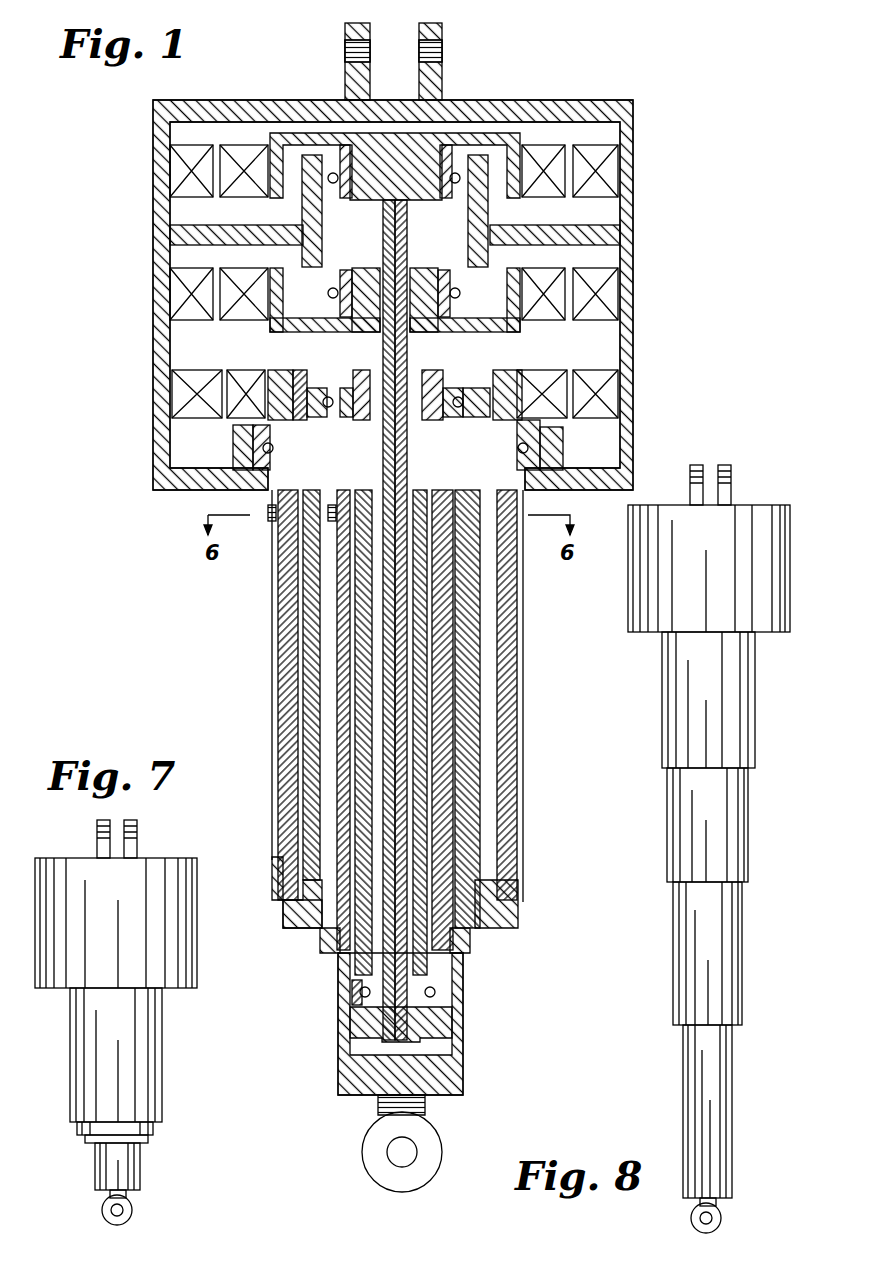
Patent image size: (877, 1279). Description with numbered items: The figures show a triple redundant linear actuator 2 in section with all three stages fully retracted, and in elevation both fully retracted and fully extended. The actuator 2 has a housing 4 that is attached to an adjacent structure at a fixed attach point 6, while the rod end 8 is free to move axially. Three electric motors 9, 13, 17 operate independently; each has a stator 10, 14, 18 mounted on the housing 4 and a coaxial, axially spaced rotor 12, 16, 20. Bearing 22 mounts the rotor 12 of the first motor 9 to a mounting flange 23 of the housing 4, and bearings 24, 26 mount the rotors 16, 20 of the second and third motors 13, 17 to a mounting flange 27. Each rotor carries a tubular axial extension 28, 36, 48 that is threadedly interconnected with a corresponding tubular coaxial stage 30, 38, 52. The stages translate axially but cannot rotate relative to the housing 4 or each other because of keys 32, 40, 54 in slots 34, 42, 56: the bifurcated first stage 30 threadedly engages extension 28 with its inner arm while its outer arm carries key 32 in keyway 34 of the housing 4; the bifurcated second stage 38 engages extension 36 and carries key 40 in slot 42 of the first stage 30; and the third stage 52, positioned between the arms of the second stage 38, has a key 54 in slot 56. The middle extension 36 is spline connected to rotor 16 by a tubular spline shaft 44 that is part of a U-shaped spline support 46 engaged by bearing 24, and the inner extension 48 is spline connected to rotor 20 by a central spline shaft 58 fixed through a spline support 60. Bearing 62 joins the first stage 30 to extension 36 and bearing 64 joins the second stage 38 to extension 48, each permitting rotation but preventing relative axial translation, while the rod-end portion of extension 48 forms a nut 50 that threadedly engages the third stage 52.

In FIG. 1, the linear actuator 2 is at (655, 180).
In FIG. 7, the linear actuator 2 is at (188, 855).
In FIG. 8, the linear actuator 2 is at (752, 482).
In FIG. 1, the housing 4 is at (633, 300).
In FIG. 7, the housing 4 is at (122, 910).
In FIG. 8, the housing 4 is at (716, 560).
In FIG. 1, the fixed attach point 6 is at (447, 52).
In FIG. 7, the fixed attach point 6 is at (138, 828).
In FIG. 8, the fixed attach point 6 is at (682, 475).
In FIG. 1, the rod end 8 is at (372, 1180).
In FIG. 7, the rod end 8 is at (132, 1215).
In FIG. 8, the rod end 8 is at (722, 1212).
In FIG. 1, the first electric motor 9 is at (180, 358).
In FIG. 1, the stator 10 is at (172, 392).
In FIG. 1, the rotor 12 is at (242, 375).
In FIG. 1, the second electric motor 13 is at (175, 255).
In FIG. 1, the stator 14 is at (172, 292).
In FIG. 1, the rotor 16 is at (250, 265).
In FIG. 1, the third electric motor 17 is at (172, 208).
In FIG. 1, the stator 18 is at (172, 168).
In FIG. 1, the rotor 20 is at (240, 150).
In FIG. 1, the bearing 22 is at (248, 432).
In FIG. 1, the mounting flange 23 is at (565, 442).
In FIG. 1, the bearing 24 is at (322, 262).
In FIG. 1, the bearing 26 is at (450, 205).
In FIG. 1, the mounting flange 27 is at (505, 212).
In FIG. 1, the tubular axial extension 28 is at (283, 560).
In FIG. 1, the first stage 30 is at (288, 930).
In FIG. 7, the first stage 30 is at (153, 1126).
In FIG. 8, the first stage 30 is at (716, 825).
In FIG. 1, the key 32 is at (268, 520).
In FIG. 1, the slot or keyway 34 is at (272, 640).
In FIG. 1, the tubular axial extension 36 is at (365, 620).
In FIG. 1, the second stage 38 is at (322, 955).
In FIG. 7, the second stage 38 is at (148, 1140).
In FIG. 8, the second stage 38 is at (716, 955).
In FIG. 1, the key 40 is at (333, 385).
In FIG. 1, the slot 42 is at (315, 680).
In FIG. 1, the tubular spline shaft 44 is at (425, 348).
In FIG. 1, the spline support 46 is at (305, 335).
In FIG. 1, the tubular axial extension 48 is at (420, 960).
In FIG. 1, the nut 50 is at (430, 1028).
In FIG. 1, the third stage 52 is at (340, 1098).
In FIG. 7, the third stage 52 is at (118, 1170).
In FIG. 8, the third stage 52 is at (710, 1088).
In FIG. 1, the key 54 is at (328, 525).
In FIG. 1, the slot 56 is at (333, 710).
In FIG. 1, the spline shaft 58 is at (410, 1010).
In FIG. 1, the spline support 60 is at (412, 172).
In FIG. 1, the bearing 62 is at (480, 378).
In FIG. 1, the bearing 64 is at (358, 1020).